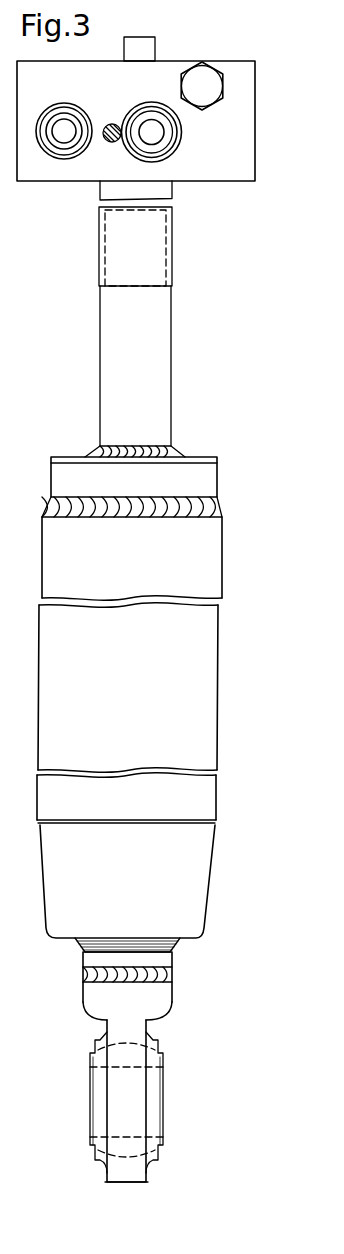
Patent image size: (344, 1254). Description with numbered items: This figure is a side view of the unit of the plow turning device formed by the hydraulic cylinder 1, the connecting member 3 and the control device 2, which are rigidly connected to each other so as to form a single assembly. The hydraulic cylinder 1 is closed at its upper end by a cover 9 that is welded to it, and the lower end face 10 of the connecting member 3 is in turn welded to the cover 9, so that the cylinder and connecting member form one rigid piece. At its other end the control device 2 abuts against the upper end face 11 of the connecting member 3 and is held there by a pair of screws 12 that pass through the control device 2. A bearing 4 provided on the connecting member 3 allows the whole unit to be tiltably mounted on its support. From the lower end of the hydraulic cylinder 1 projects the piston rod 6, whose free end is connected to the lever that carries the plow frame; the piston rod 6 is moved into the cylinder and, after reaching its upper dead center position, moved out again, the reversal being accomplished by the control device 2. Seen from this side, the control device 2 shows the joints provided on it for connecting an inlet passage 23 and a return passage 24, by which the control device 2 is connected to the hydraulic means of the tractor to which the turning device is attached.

The hydraulic cylinder 1 is at (205, 698).
The control device 2 is at (228, 148).
The connecting member 3 is at (153, 368).
The bearing 4 is at (157, 252).
The piston rod 6 is at (157, 997).
The cover 9 is at (193, 485).
The lower end face 10 is at (142, 443).
The upper end face 11 is at (153, 182).
The screws 12 is at (147, 46).
The inlet passage 23 is at (64, 136).
The return passage 24 is at (168, 127).